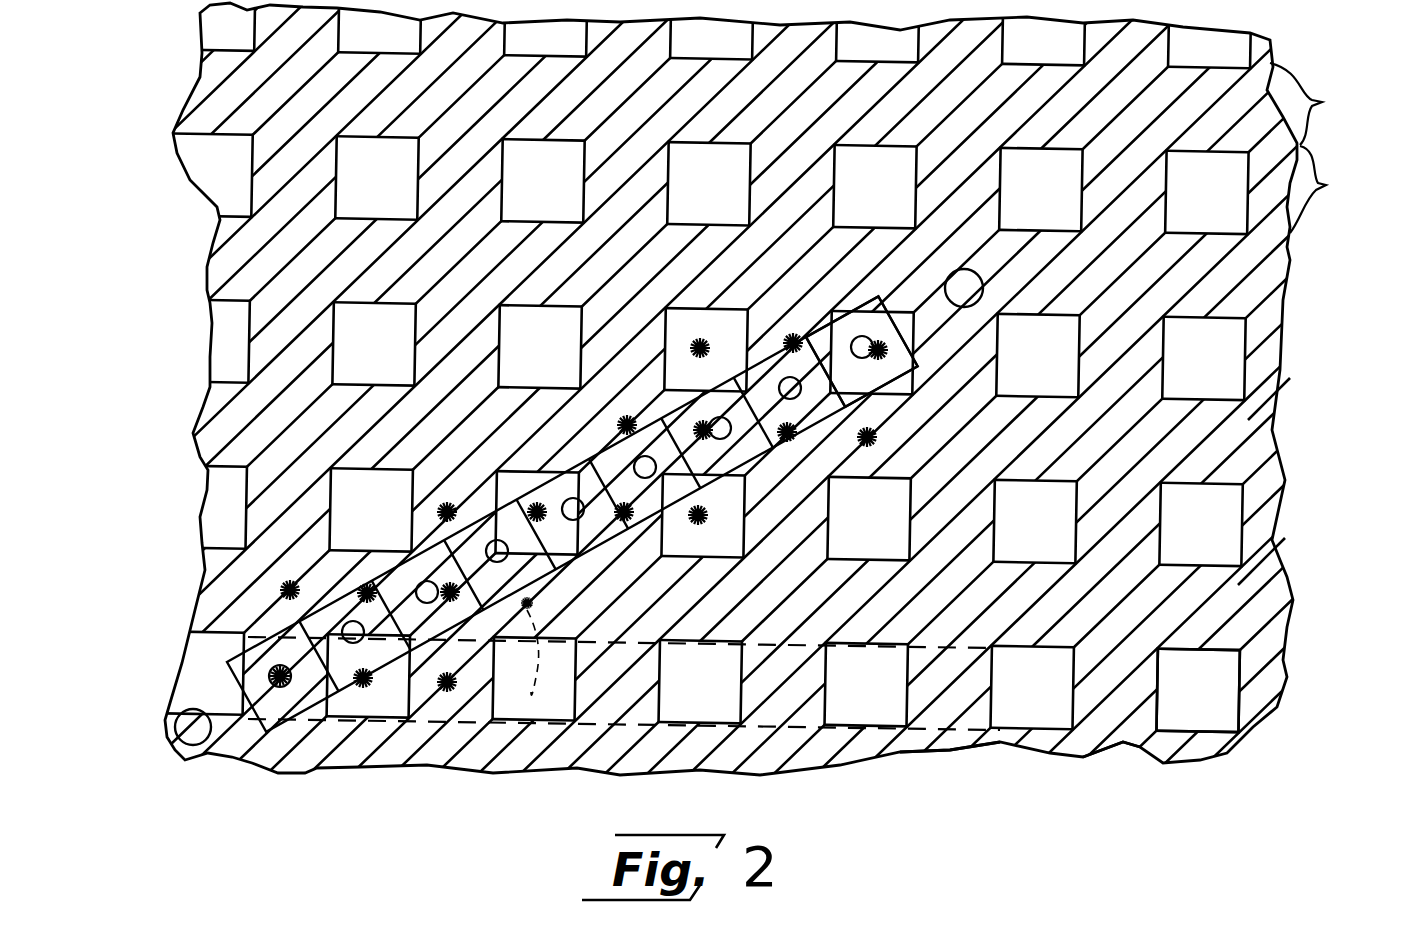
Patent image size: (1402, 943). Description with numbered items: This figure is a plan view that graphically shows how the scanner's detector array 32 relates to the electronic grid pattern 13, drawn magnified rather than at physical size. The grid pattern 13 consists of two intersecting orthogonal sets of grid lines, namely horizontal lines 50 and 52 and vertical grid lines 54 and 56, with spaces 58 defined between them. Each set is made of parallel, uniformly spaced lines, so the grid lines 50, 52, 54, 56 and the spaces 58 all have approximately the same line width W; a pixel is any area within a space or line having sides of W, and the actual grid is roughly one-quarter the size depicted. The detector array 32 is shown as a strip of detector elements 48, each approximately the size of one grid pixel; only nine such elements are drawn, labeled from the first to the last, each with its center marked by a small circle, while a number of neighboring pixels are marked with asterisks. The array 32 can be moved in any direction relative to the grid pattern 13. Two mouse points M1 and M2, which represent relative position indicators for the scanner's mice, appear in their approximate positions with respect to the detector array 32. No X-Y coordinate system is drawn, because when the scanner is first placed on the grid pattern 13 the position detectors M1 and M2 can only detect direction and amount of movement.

The electronic grid pattern 13 is at (200, 78).
The line width W is at (1324, 148).
The detector elements 48 is at (295, 596).
The detector array 32 is at (236, 678).
The first mouse point M1 is at (177, 737).
The second mouse point M2 is at (983, 283).
The horizontal grid line 50 is at (1245, 421).
The horizontal grid line 52 is at (1240, 583).
The vertical grid line 54 is at (940, 748).
The vertical grid line 56 is at (1127, 733).
The spaces 58 is at (1213, 688).